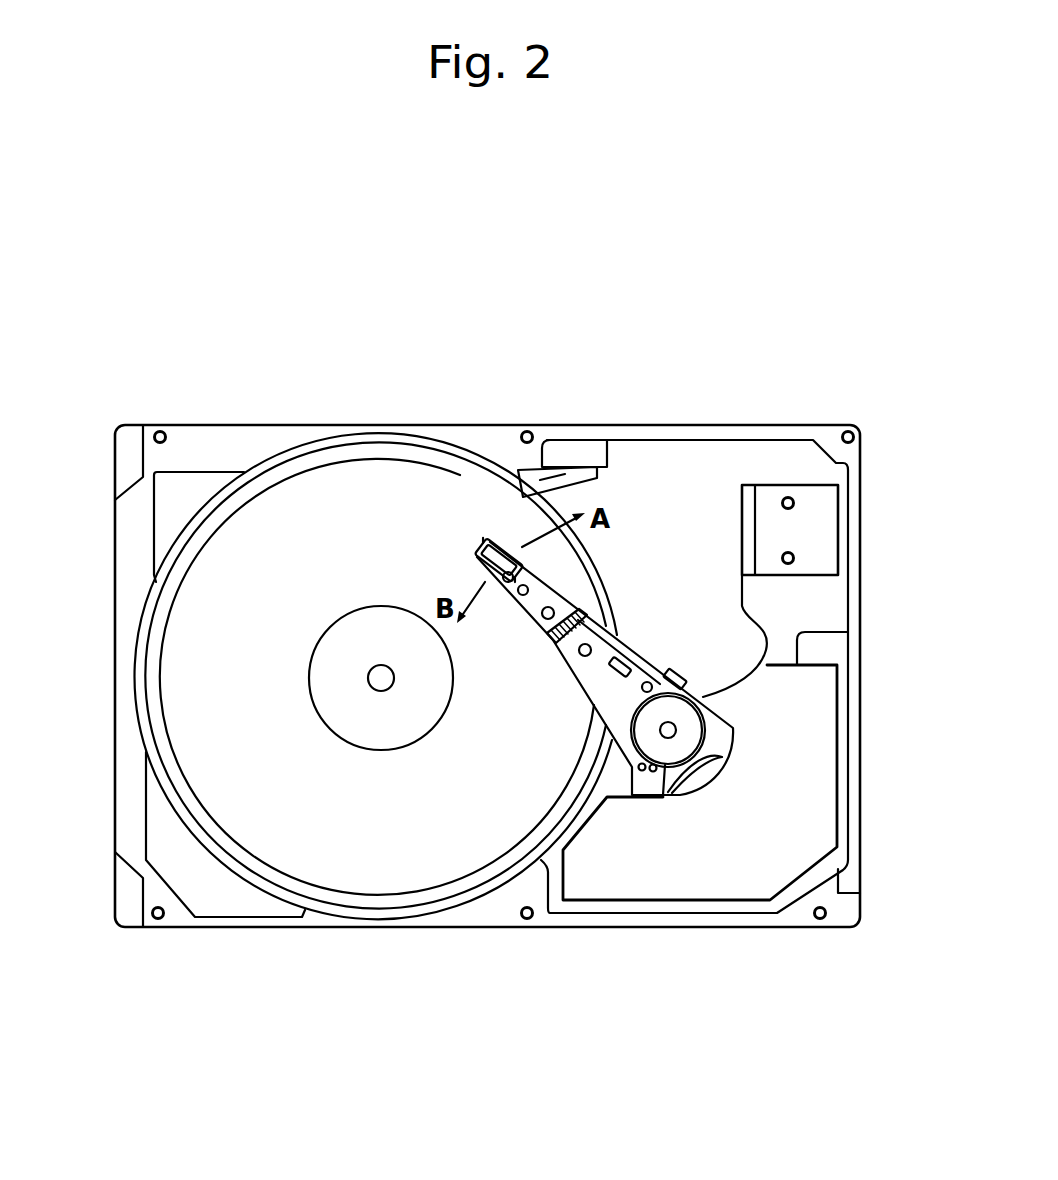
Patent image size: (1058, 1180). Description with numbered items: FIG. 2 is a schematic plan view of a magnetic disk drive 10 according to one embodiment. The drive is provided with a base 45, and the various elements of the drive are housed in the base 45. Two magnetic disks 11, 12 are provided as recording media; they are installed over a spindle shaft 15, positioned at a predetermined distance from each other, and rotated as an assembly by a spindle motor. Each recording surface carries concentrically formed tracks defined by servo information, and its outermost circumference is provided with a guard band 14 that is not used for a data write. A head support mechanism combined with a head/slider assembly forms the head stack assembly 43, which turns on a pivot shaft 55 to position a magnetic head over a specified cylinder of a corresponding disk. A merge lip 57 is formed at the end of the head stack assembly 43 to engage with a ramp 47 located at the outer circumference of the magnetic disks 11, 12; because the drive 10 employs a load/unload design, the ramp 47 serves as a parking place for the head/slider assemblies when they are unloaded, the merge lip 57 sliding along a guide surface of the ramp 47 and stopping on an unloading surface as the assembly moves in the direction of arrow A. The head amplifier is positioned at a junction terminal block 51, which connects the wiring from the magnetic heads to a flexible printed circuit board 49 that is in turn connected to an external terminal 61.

The magnetic disk drive 10 is at (390, 412).
The magnetic disk 11 is at (385, 832).
The magnetic disk 12 is at (377, 727).
The guard band 14 is at (228, 850).
The spindle shaft 15 is at (368, 673).
The head stack assembly 43 is at (547, 687).
The base 45 is at (703, 466).
The ramp 47 is at (568, 465).
The flexible printed circuit board 49 is at (765, 622).
The junction terminal block 51 is at (673, 678).
The pivot shaft 55 is at (668, 730).
The merge lip 57 is at (488, 547).
The external terminal 61 is at (817, 533).